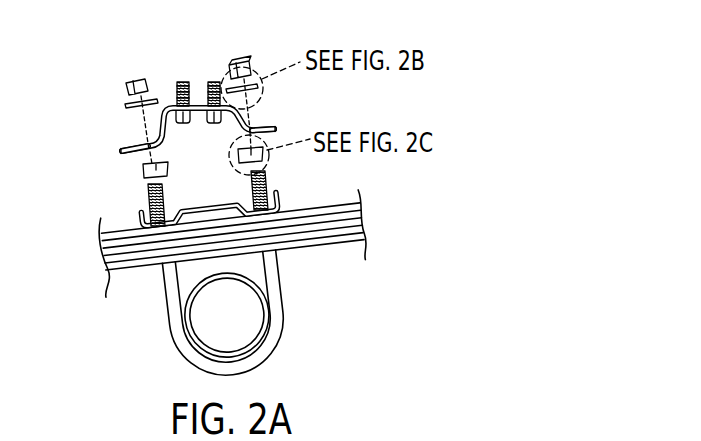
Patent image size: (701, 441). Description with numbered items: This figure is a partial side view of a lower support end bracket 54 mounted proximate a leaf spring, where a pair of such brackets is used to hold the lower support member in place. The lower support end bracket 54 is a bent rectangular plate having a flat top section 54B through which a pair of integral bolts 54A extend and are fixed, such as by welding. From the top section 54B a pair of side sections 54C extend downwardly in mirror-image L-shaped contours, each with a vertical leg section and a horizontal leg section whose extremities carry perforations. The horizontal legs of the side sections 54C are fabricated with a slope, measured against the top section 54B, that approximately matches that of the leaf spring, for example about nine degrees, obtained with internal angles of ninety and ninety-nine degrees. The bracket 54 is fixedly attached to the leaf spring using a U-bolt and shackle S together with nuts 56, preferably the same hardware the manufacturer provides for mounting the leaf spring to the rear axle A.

The lower support end bracket 54 is at (118, 149).
The integral bolts 54A is at (214, 80).
The top section 54B is at (203, 111).
The side sections 54C is at (275, 127).
The nuts 56 is at (140, 78).
The shackle S is at (280, 202).
The axle A is at (235, 331).